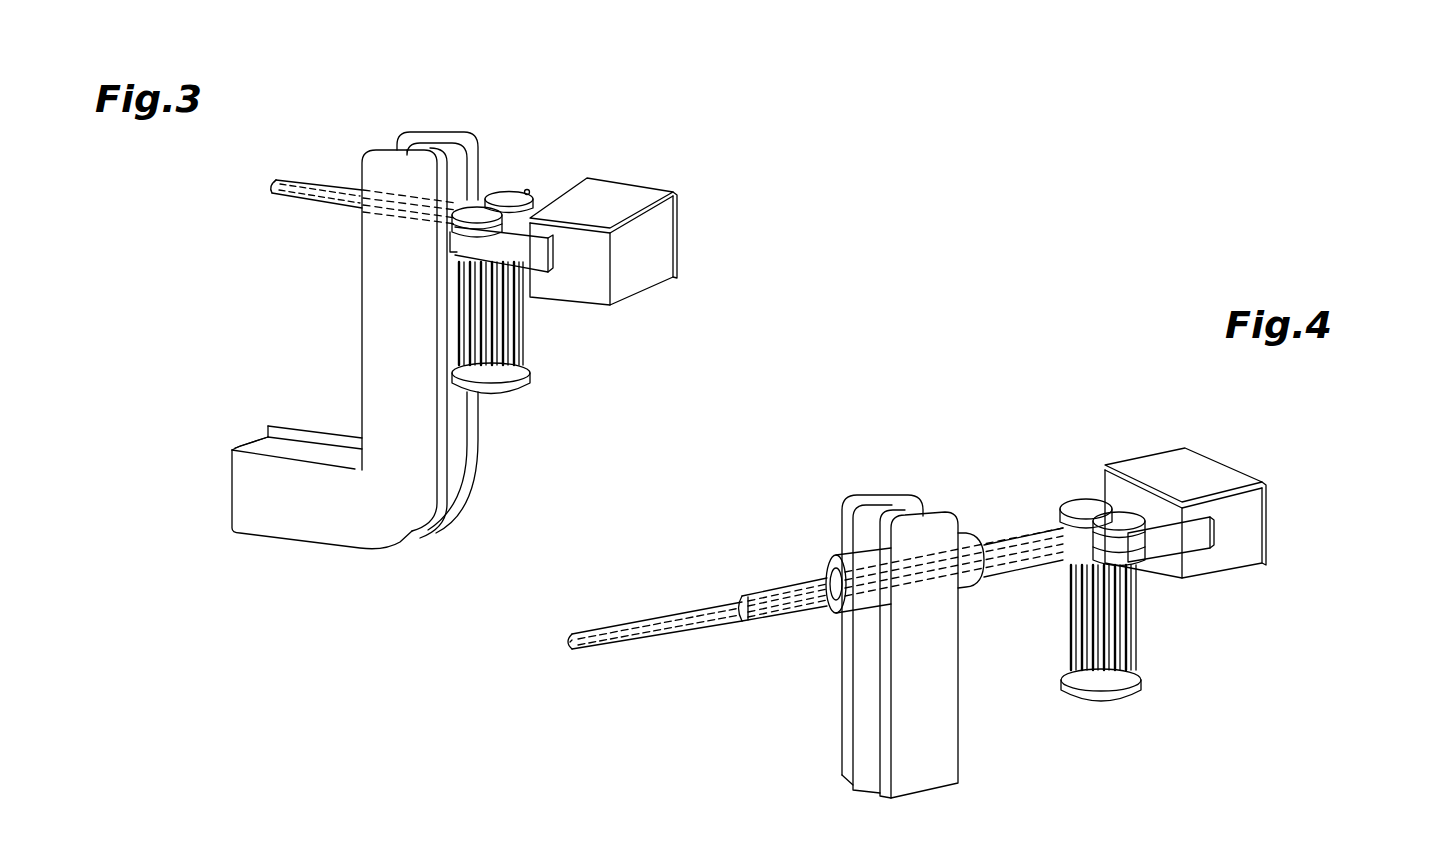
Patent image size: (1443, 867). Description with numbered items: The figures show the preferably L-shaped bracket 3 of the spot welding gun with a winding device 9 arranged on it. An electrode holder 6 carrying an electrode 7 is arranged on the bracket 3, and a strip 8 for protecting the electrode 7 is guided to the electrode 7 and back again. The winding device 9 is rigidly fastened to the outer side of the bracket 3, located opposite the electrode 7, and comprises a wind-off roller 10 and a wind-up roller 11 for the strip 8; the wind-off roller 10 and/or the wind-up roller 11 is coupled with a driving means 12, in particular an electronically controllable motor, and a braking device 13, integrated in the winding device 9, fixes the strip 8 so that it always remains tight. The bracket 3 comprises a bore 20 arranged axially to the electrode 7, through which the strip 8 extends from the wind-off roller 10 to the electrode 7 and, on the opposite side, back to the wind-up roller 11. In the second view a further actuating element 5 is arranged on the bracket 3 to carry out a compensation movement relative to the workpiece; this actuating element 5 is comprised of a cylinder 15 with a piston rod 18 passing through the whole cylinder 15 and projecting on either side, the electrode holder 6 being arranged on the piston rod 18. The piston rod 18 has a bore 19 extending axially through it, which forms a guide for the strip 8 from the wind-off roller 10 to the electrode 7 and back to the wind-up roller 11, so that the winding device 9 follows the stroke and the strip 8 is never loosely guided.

In FIG. 3, the bracket 3 is at (257, 492).
In FIG. 4, the bracket 3 is at (920, 675).
In FIG. 4, the actuating element 5 is at (925, 545).
In FIG. 3, the electrode holder 6 is at (340, 190).
In FIG. 4, the electrode holder 6 is at (815, 640).
In FIG. 3, the electrode 7 is at (282, 207).
In FIG. 4, the electrode 7 is at (557, 658).
In FIG. 3, the strip 8 is at (277, 180).
In FIG. 4, the strip 8 is at (657, 623).
In FIG. 3, the winding device 9 is at (623, 269).
In FIG. 4, the winding device 9 is at (1205, 485).
In FIG. 3, the wind-off roller 10 is at (513, 200).
In FIG. 4, the wind-off roller 10 is at (1083, 510).
In FIG. 3, the wind-up roller 11 is at (478, 217).
In FIG. 4, the wind-up roller 11 is at (1122, 525).
In FIG. 3, the driving means 12 is at (505, 387).
In FIG. 4, the driving means 12 is at (1113, 688).
In FIG. 3, the braking device 13 is at (632, 250).
In FIG. 4, the braking device 13 is at (1247, 533).
In FIG. 4, the cylinder 15 is at (968, 577).
In FIG. 4, the piston rod 18 is at (780, 585).
In FIG. 4, the bore 19 is at (800, 615).
In FIG. 3, the bore 20 is at (392, 215).